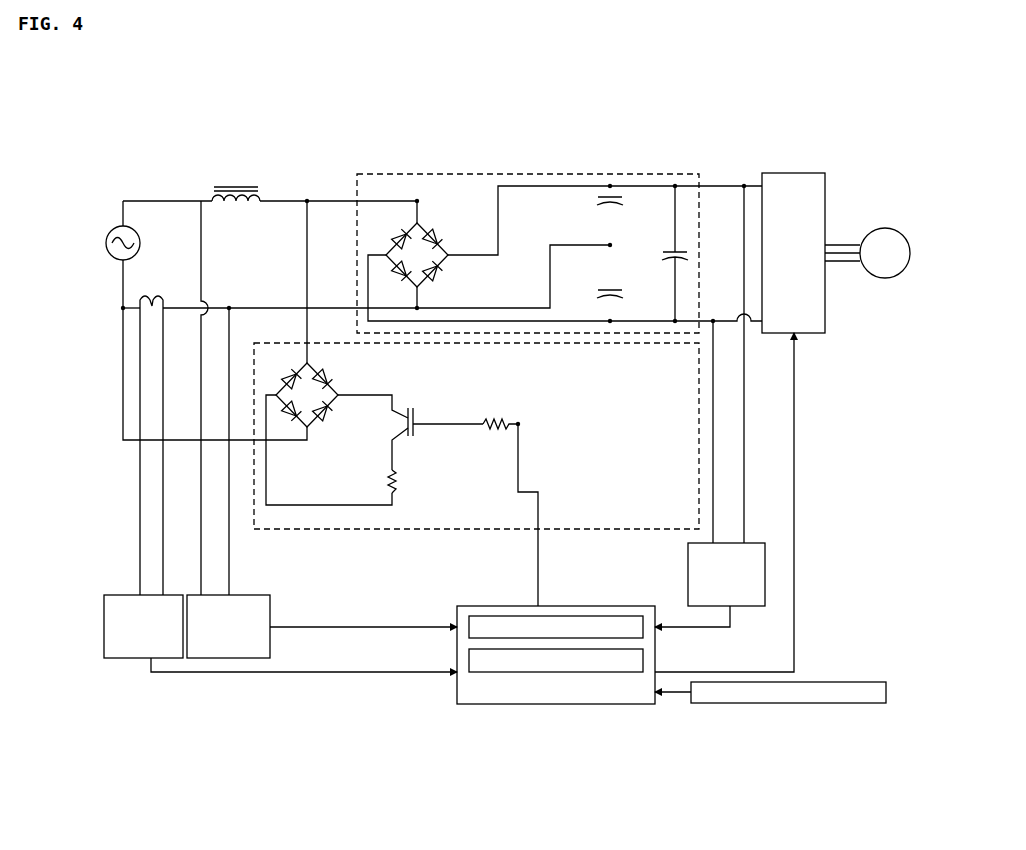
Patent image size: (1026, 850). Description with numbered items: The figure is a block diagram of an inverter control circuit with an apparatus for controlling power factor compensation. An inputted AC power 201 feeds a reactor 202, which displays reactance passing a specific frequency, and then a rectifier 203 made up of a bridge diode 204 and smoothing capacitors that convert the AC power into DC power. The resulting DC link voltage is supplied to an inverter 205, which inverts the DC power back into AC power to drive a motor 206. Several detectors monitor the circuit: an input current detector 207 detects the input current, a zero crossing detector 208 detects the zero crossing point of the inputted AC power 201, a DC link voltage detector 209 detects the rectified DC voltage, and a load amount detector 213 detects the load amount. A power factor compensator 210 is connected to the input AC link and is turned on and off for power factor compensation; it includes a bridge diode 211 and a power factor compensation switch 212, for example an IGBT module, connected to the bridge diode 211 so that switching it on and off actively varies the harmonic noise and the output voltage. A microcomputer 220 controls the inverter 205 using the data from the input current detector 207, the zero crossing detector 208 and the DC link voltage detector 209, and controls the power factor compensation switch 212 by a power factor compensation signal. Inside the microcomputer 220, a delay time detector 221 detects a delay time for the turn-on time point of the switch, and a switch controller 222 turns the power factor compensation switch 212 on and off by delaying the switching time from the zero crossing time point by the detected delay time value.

The AC power 201 is at (111, 230).
The reactor 202 is at (262, 195).
The rectifier 203 is at (528, 232).
The bridge diode 204 is at (425, 221).
The inverter 205 is at (794, 173).
The motor 206 is at (884, 228).
The input current detector 207 is at (136, 660).
The zero crossing detector 208 is at (242, 594).
The DC link voltage detector 209 is at (688, 572).
The power factor compensator 210 is at (476, 474).
The bridge diode 211 is at (320, 370).
The power factor compensation switch 212 is at (418, 415).
The load amount detector 213 is at (760, 705).
The microcomputer 220 is at (625, 557).
The delay time detector 221 is at (590, 616).
The switch controller 222 is at (623, 673).